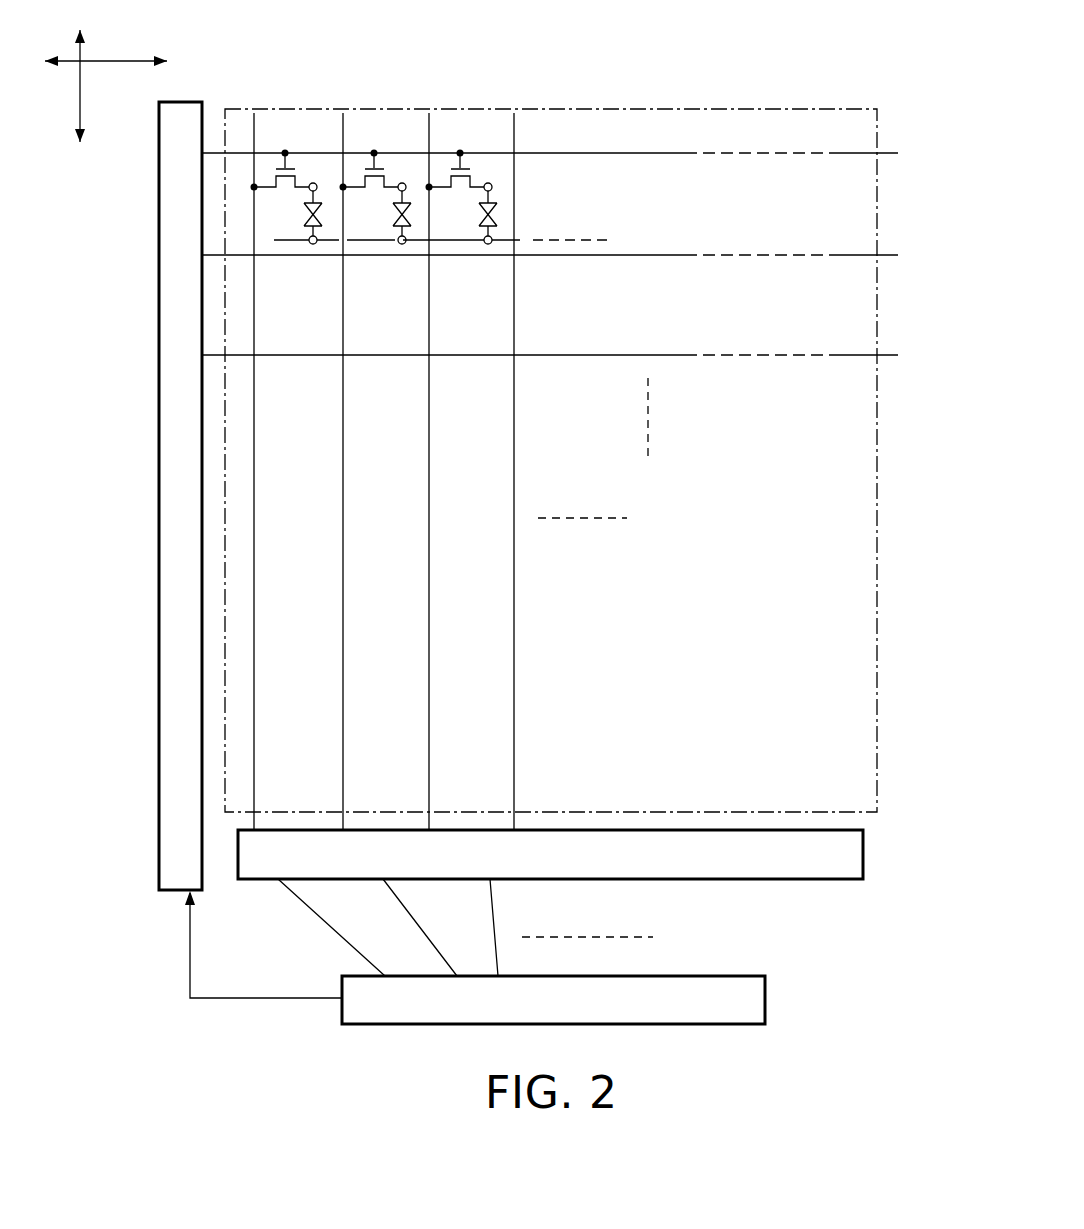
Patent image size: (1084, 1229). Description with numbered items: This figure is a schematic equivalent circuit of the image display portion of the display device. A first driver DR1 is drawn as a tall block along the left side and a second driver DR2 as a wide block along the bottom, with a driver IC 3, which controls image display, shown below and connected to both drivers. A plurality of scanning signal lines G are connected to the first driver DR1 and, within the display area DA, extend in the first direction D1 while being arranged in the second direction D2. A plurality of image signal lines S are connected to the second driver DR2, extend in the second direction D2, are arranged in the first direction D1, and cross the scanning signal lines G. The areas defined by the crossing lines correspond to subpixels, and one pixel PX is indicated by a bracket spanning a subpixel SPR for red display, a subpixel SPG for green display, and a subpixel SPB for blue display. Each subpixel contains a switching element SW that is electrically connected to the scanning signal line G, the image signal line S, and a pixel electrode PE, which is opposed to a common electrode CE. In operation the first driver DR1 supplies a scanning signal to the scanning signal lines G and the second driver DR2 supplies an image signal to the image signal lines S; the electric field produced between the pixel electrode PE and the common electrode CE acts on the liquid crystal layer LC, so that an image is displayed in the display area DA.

The first direction D1 is at (125, 61).
The second direction D2 is at (77, 103).
The first driver DR1 is at (158, 393).
The second driver DR2 is at (863, 858).
The driver IC 3 is at (765, 1006).
The display area DA is at (743, 109).
The scanning signal line G is at (658, 153).
The image signal line S is at (254, 612).
The pixel PX is at (518, 55).
The subpixel SPR is at (432, 189).
The subpixel SPG is at (407, 155).
The subpixel SPB is at (493, 155).
The switching element SW is at (473, 175).
The pixel electrode PE is at (492, 192).
The liquid crystal layer LC is at (498, 215).
The common electrode CE is at (489, 245).